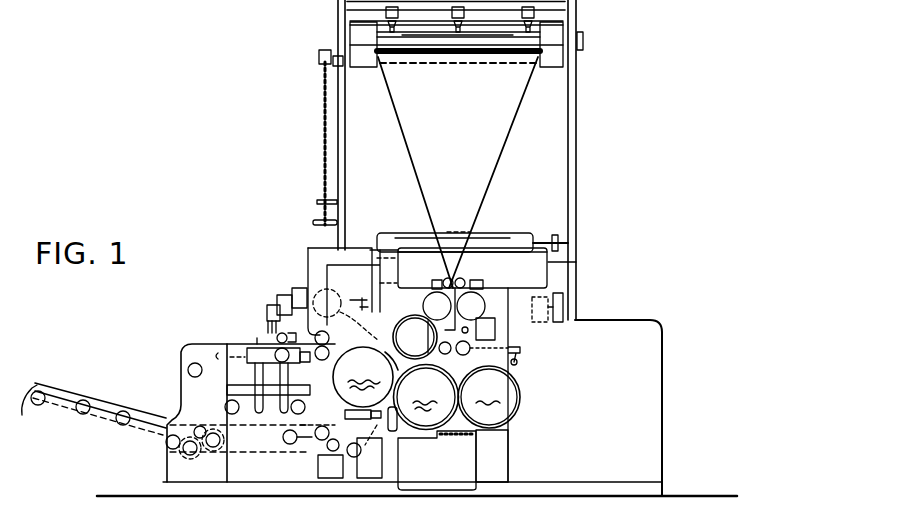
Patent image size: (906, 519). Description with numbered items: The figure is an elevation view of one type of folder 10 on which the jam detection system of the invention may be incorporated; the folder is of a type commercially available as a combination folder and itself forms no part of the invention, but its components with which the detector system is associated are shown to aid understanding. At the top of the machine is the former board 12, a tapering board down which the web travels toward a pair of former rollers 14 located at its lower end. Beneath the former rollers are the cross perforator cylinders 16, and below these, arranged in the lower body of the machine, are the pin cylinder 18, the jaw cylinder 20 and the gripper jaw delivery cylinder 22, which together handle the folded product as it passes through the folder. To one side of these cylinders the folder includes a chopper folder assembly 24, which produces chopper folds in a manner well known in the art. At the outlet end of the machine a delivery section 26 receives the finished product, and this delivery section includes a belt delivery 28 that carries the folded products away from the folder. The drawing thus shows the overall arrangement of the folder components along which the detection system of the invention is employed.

The folder 10 is at (727, 140).
The former board 12 is at (478, 127).
The former rollers 14 is at (445, 283).
The cross perforator cylinders 16 is at (498, 288).
The pin cylinder 18 is at (489, 397).
The jaw cylinder 20 is at (426, 397).
The gripper jaw delivery cylinder 22 is at (365, 377).
The chopper folder assembly 24 is at (253, 342).
The delivery section 26 is at (151, 411).
The belt delivery 28 is at (274, 460).